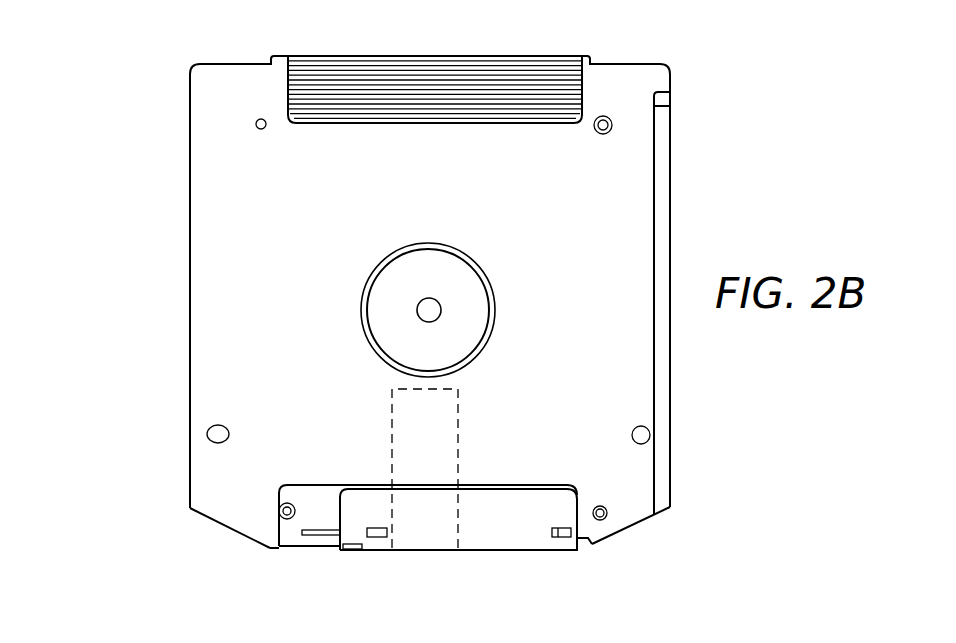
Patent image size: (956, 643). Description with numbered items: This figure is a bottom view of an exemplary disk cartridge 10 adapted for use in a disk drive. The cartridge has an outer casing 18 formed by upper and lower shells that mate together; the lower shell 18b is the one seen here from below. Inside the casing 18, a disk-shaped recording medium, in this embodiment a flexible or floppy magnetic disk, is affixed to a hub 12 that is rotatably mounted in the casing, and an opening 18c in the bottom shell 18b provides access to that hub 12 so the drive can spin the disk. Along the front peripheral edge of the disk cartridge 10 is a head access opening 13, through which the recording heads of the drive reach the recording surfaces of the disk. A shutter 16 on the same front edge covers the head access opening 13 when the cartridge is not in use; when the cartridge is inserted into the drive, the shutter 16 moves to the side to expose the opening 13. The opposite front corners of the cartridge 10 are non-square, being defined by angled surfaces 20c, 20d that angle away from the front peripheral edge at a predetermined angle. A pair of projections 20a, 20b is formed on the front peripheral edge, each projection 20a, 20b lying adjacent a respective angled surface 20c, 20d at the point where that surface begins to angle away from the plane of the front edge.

The disk cartridge 10 is at (128, 110).
The hub 12 is at (417, 246).
The head access opening 13 is at (425, 561).
The shutter 16 is at (520, 520).
The outer casing 18 is at (190, 310).
The lower shell 18b is at (633, 82).
The opening 18c is at (496, 310).
The projection 20a is at (270, 548).
The projection 20b is at (595, 545).
The angled surface 20c is at (228, 529).
The angled surface 20d is at (636, 532).